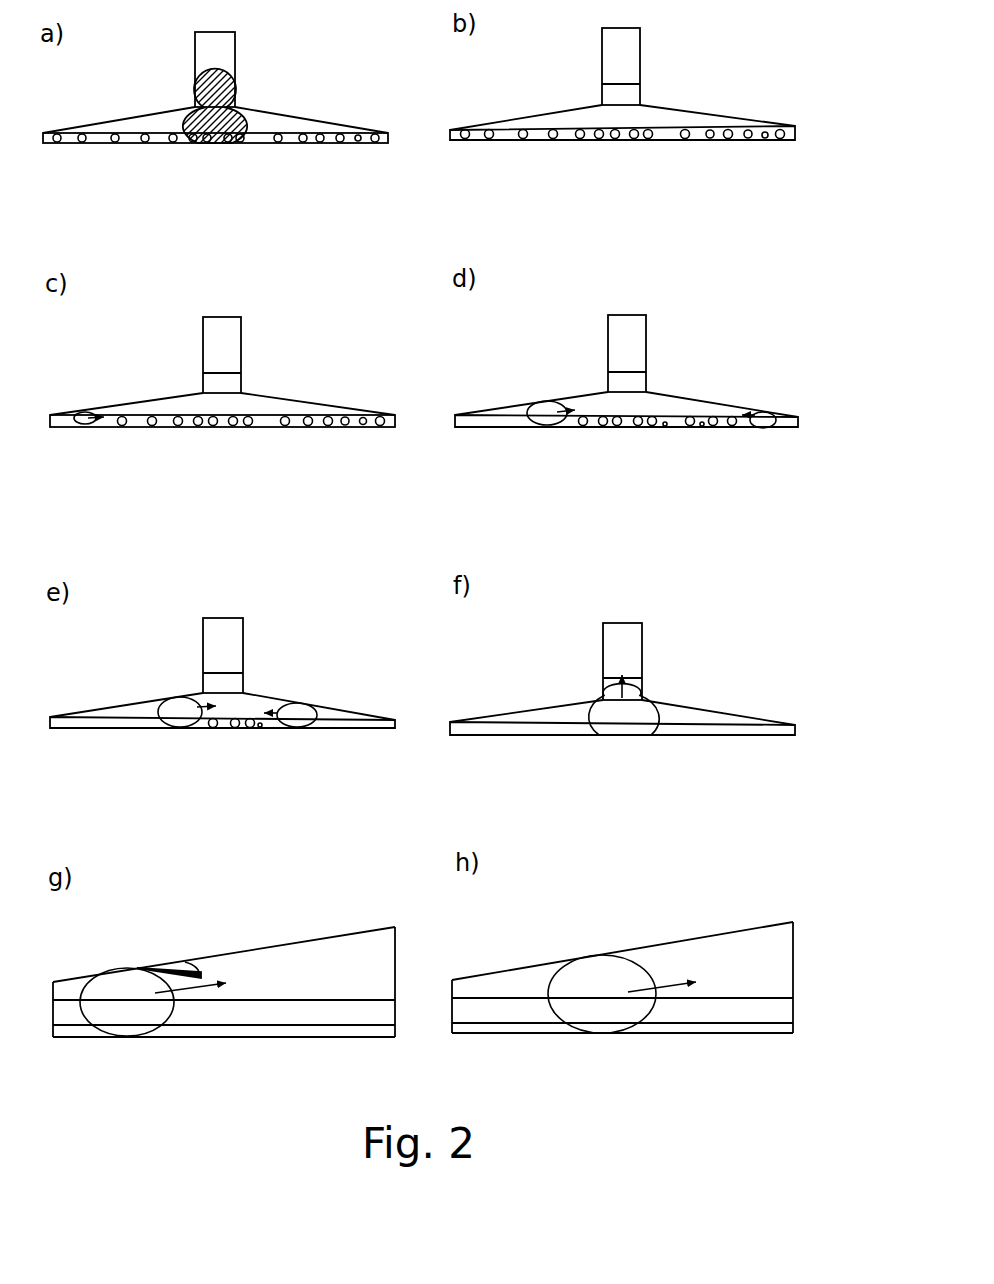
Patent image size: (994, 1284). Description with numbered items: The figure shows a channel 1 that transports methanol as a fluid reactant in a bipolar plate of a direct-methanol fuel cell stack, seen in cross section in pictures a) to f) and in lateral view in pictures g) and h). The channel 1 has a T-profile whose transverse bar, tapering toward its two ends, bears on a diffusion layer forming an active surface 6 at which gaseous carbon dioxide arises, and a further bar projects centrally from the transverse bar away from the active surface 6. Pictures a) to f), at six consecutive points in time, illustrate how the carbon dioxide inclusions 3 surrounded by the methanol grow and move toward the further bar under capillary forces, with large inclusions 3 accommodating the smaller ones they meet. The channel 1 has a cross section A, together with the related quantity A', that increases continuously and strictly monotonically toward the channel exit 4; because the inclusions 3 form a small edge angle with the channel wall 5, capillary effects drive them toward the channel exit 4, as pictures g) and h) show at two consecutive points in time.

The channel 1 is at (187, 58).
The inclusions 3 is at (57, 143).
The channel exit 4 is at (397, 947).
The channel wall 5 is at (113, 120).
The active surface 6 is at (257, 143).
The cross section A is at (237, 69).
The cross section portion A' is at (198, 106).